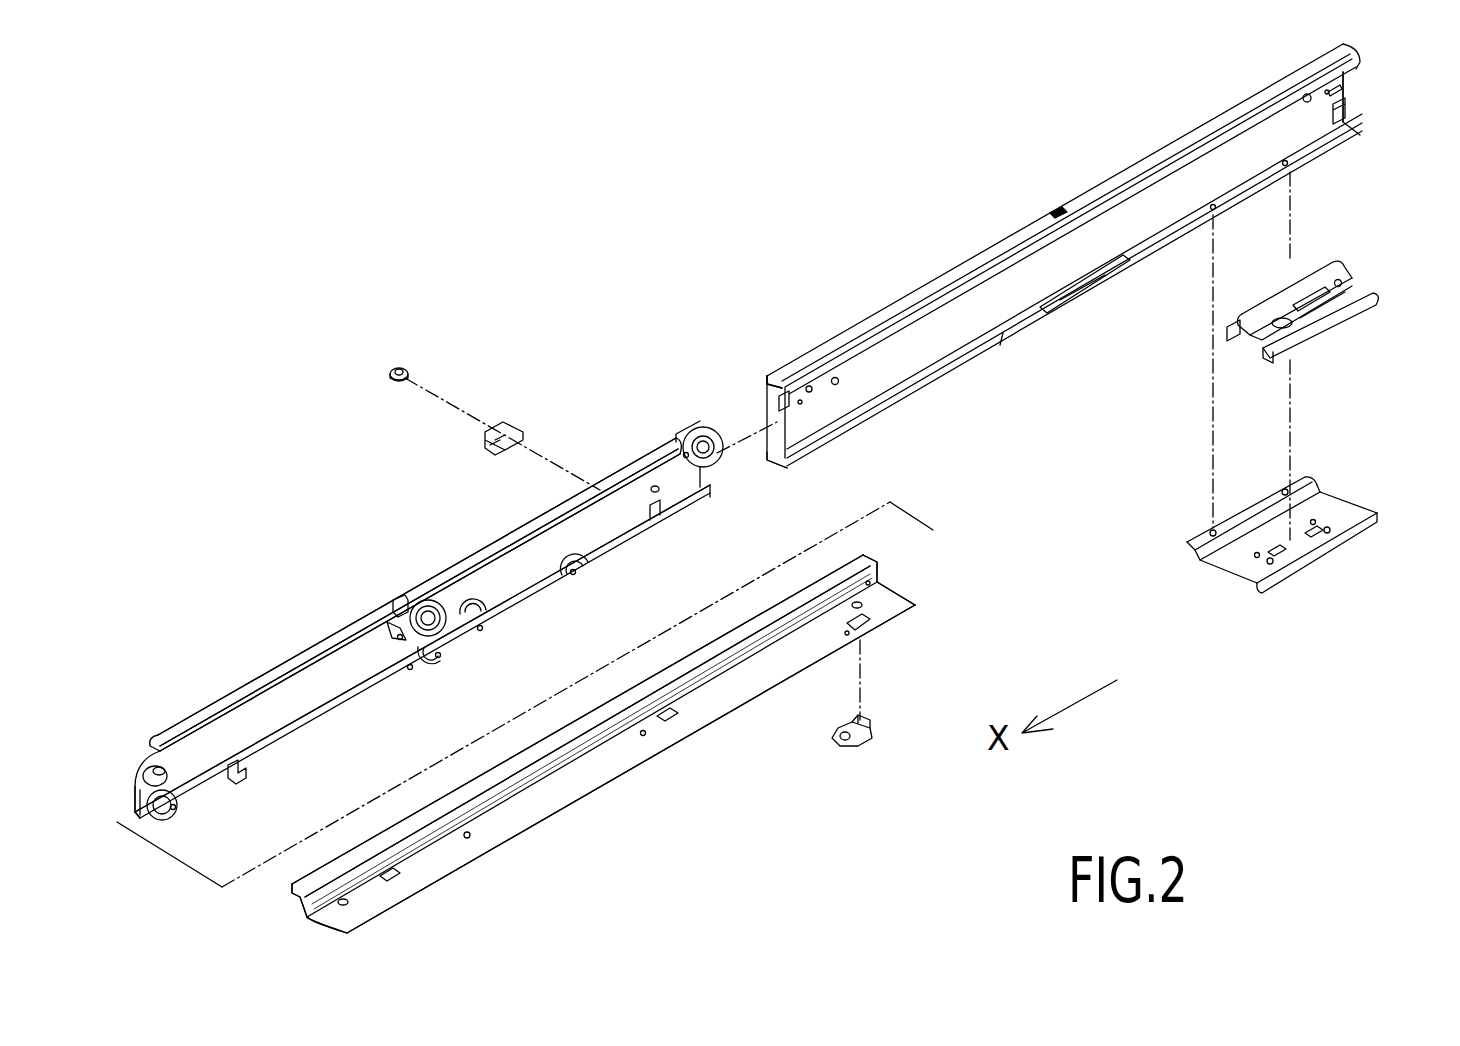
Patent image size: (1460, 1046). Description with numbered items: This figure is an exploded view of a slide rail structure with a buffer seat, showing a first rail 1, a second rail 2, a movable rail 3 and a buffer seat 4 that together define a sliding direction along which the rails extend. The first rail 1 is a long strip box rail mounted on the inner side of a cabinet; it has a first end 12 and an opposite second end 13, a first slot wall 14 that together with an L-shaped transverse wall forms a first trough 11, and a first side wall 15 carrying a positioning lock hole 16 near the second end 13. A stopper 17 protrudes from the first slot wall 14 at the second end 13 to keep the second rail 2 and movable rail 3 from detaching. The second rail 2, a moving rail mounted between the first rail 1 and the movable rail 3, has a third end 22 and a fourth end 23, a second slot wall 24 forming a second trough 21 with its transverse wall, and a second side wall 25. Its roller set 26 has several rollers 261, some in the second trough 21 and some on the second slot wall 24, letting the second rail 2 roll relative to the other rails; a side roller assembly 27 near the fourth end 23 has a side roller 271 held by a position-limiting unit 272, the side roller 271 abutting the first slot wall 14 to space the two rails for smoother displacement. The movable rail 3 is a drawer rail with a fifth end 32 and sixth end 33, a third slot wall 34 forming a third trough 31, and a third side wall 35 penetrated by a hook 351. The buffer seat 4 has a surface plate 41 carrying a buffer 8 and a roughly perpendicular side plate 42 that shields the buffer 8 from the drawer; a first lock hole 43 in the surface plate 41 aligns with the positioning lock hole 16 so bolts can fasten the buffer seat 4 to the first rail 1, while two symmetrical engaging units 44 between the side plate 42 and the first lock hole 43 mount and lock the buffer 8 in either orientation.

The first rail 1 is at (932, 265).
The first trough 11 is at (778, 378).
The first end 12 is at (768, 457).
The second end 13 is at (1353, 88).
The first slot wall 14 is at (933, 353).
The first side wall 15 is at (1002, 328).
The positioning lock hole 16 is at (1285, 163).
The stopper 17 is at (1350, 110).
The buffer 8 is at (1363, 270).
The second rail 2 is at (262, 672).
The second trough 21 is at (140, 823).
The third end 22 is at (125, 778).
The fourth end 23 is at (693, 475).
The second slot wall 24 is at (503, 580).
The second side wall 25 is at (165, 742).
The roller set 26 is at (438, 655).
The rollers 261 is at (684, 438).
The side roller assembly 27 is at (520, 292).
The side roller 271 is at (405, 365).
The position-limiting unit 272 is at (512, 420).
The movable rail 3 is at (593, 800).
The third trough 31 is at (290, 897).
The fifth end 32 is at (307, 920).
The sixth end 33 is at (893, 583).
The third slot wall 34 is at (500, 790).
The third side wall 35 is at (893, 605).
The hook 351 is at (858, 742).
The buffer seat 4 is at (1240, 597).
The surface plate 41 is at (1333, 508).
The side plate 42 is at (1360, 527).
The first lock hole 43 is at (1213, 530).
The engaging units 44 is at (1327, 535).